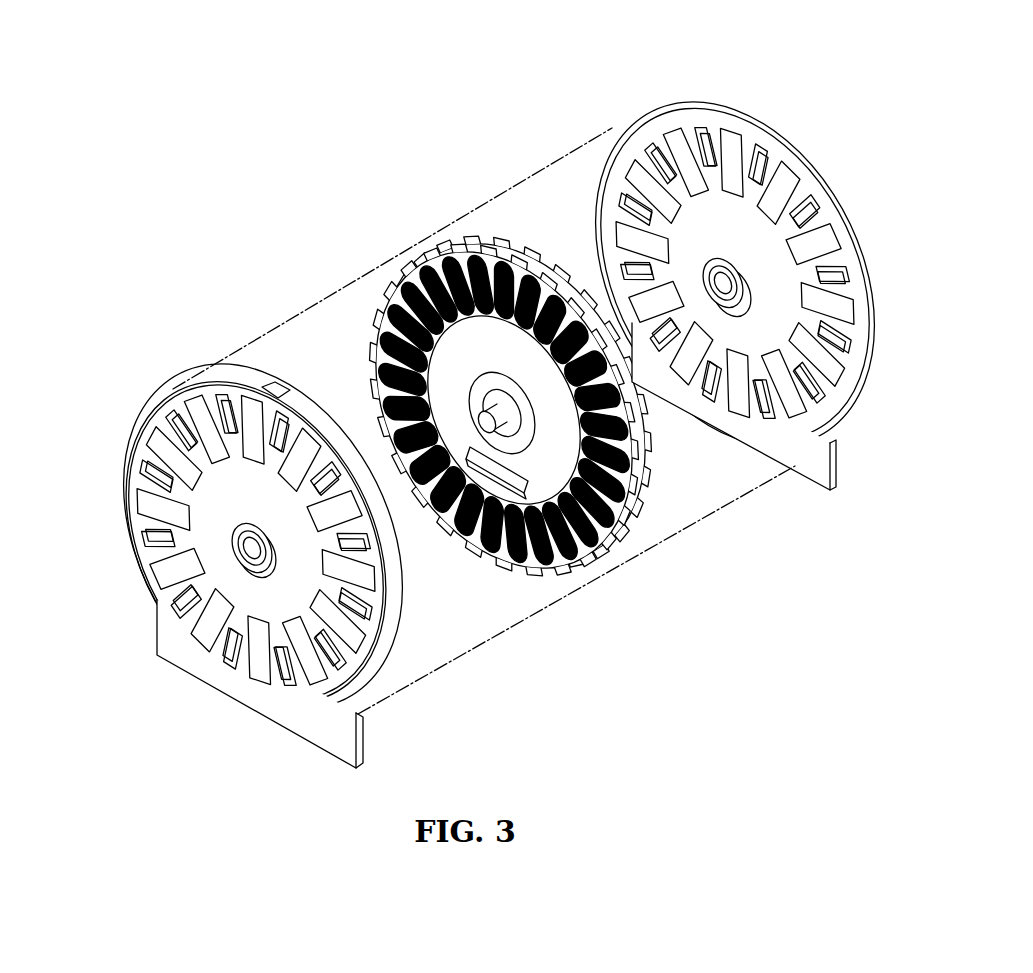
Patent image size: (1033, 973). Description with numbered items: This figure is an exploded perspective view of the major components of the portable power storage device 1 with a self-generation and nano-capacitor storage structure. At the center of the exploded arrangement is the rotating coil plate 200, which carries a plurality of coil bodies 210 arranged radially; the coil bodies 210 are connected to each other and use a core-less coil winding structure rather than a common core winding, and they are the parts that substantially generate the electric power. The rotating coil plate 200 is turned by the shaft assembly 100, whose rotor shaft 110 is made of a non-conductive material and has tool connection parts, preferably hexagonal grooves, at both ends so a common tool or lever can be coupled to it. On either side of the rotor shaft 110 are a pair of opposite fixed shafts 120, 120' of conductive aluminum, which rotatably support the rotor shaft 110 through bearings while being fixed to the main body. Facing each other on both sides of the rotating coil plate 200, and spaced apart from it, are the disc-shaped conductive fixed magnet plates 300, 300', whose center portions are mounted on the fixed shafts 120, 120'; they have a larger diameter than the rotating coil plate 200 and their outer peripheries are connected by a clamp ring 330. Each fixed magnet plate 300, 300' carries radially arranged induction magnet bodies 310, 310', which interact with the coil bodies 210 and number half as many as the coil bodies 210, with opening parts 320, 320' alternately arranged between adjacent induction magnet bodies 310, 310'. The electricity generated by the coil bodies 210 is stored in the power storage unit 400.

The portable power storage device 1 is at (146, 179).
The shaft assembly 100 is at (505, 418).
The rotor shaft 110 is at (619, 468).
The fixed shaft 120 is at (166, 550).
The fixed shaft 120' is at (797, 251).
The rotating coil plate 200 is at (393, 231).
The coil body 210 is at (460, 255).
The fixed magnet plate 300 is at (196, 558).
The fixed magnet plate 300' is at (738, 271).
The induction magnet body 310 is at (209, 542).
The induction magnet body 310' is at (735, 260).
The opening part 320 is at (236, 527).
The opening part 320' is at (739, 273).
The clamp ring 330 is at (220, 370).
The power storage unit 400 is at (535, 578).